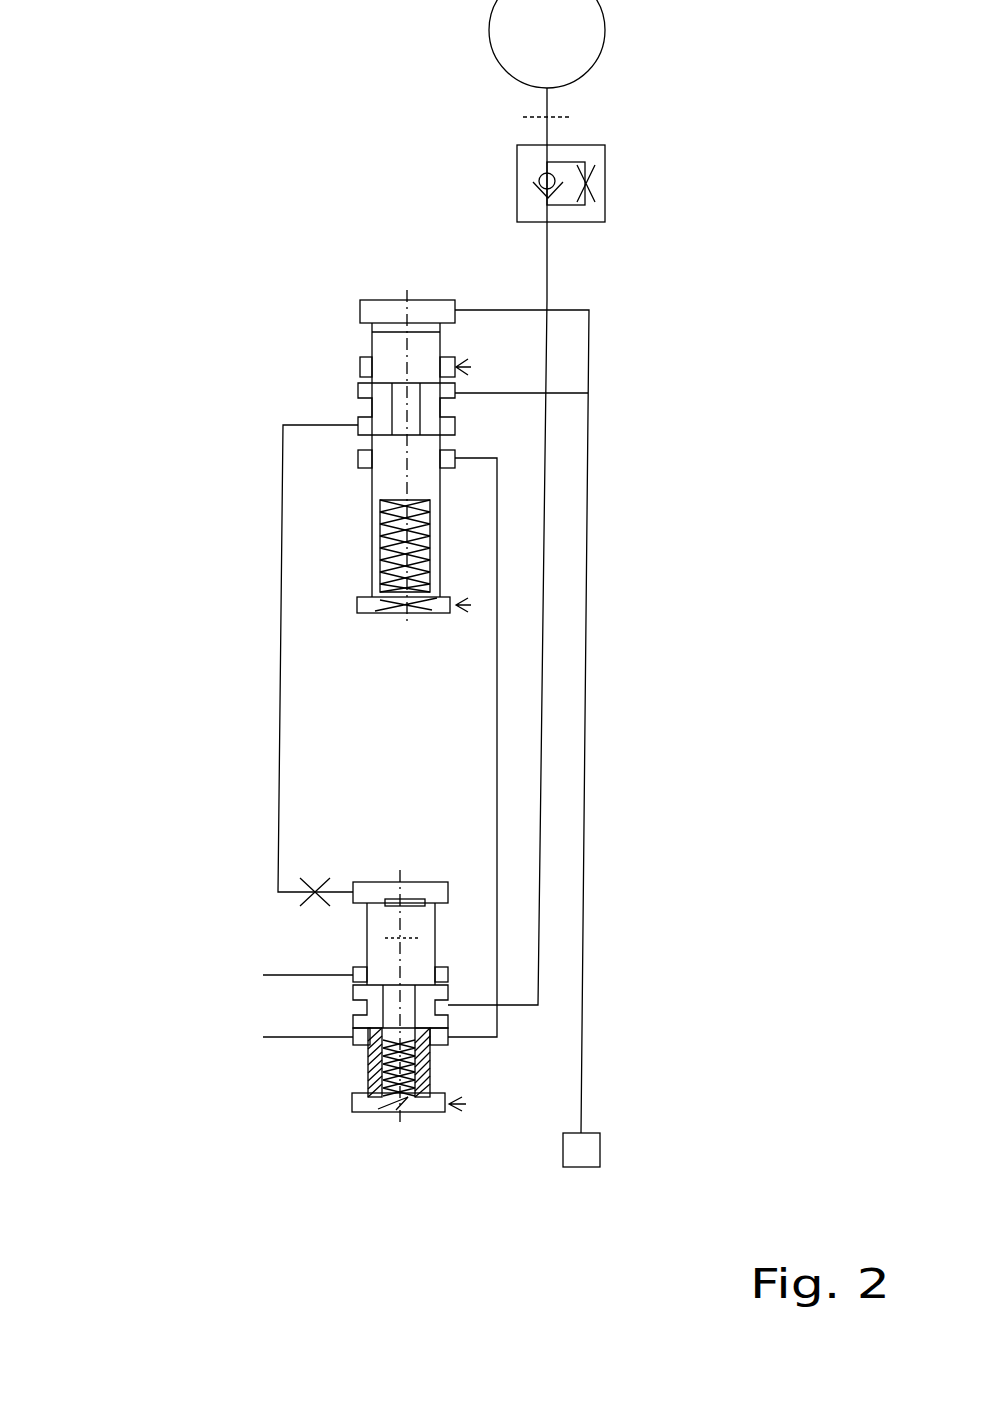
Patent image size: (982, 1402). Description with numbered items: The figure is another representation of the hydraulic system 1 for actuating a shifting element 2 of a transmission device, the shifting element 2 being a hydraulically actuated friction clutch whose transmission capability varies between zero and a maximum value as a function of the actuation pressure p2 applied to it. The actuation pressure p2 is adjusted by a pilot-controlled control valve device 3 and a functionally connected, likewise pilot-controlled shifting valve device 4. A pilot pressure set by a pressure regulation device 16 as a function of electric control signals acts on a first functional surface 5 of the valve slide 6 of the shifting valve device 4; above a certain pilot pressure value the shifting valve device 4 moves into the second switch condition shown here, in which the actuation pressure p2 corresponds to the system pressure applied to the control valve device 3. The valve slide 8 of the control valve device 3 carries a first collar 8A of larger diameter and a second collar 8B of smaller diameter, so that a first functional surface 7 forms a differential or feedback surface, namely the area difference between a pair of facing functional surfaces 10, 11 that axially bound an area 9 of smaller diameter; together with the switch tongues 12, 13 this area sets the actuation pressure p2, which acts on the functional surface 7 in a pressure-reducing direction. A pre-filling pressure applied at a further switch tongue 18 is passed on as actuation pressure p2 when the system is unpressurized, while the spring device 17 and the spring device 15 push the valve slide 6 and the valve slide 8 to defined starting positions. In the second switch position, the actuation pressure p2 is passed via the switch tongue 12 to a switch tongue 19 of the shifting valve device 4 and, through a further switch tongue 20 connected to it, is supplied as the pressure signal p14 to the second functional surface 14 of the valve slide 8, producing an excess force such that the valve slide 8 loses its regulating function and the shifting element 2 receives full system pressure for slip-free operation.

The hydraulic system 1 is at (285, 215).
The shifting element 2 is at (580, 48).
The control valve device 3 is at (446, 981).
The shifting valve device 4 is at (453, 451).
The first functional surface 5 is at (365, 300).
The valve slide 6 is at (385, 484).
The first functional surface 7 is at (450, 1013).
The valve slide 8 is at (385, 938).
The first collar 8A is at (418, 938).
The second collar 8B is at (430, 1063).
The area of smaller diameter 9 is at (352, 995).
The functional surface 10 is at (355, 992).
The functional surface 11 is at (450, 1020).
The switch tongue 12 is at (362, 1042).
The switch tongue 13 is at (352, 1013).
The second functional surface 14 is at (395, 897).
The spring device 15 is at (408, 1110).
The pressure regulation device 16 is at (582, 1152).
The spring device 17 is at (435, 532).
The switch tongue 18 is at (448, 980).
The switch tongue 19 is at (363, 458).
The switch tongue 20 is at (447, 423).
The pressure signal p14 is at (280, 675).
The actuation pressure p2 is at (543, 672).